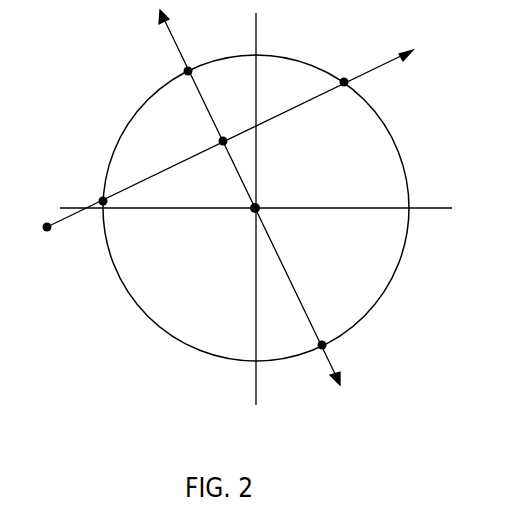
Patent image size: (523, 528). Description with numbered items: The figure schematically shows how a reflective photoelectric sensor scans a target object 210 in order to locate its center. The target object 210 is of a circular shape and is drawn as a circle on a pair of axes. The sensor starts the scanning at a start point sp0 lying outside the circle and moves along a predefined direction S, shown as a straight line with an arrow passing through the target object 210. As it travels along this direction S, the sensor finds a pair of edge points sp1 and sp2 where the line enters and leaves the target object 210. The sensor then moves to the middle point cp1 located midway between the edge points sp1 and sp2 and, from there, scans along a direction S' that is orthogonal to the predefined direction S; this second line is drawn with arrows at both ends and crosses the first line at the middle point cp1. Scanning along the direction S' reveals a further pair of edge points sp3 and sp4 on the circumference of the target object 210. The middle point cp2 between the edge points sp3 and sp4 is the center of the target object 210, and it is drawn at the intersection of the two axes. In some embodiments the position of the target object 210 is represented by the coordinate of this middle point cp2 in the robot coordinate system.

The target object 210 is at (268, 55).
The predefined direction S is at (230, 125).
The orthogonal scanning direction S' is at (252, 202).
The start point sp0 is at (49, 237).
The first edge point sp1 is at (90, 194).
The second edge point sp2 is at (349, 72).
The third edge point sp3 is at (199, 59).
The fourth edge point sp4 is at (340, 352).
The first middle point cp1 is at (209, 140).
The second middle point cp2 is at (273, 200).